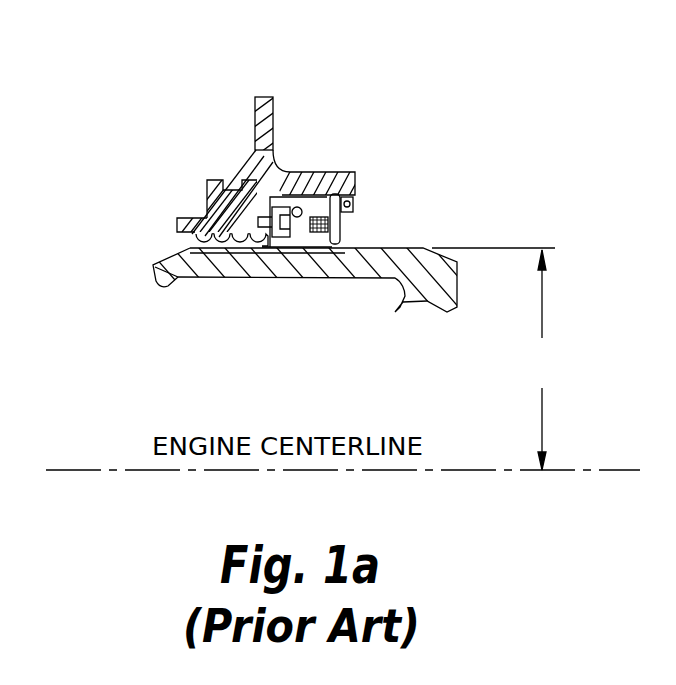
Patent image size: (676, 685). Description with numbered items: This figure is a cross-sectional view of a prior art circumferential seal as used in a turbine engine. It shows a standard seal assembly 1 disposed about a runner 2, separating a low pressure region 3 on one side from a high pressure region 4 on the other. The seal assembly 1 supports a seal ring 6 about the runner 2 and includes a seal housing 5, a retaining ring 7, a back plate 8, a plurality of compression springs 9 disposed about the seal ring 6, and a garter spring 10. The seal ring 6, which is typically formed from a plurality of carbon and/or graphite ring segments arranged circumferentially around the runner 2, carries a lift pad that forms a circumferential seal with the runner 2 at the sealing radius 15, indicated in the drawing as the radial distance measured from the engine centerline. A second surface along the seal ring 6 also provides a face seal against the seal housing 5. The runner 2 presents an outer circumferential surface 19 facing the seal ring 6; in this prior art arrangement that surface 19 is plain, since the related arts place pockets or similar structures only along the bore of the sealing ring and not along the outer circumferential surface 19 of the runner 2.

The seal assembly 1 is at (236, 72).
The runner 2 is at (178, 260).
The low pressure region 3 is at (97, 123).
The high pressure region 4 is at (547, 153).
The seal housing 5 is at (274, 97).
The seal ring 6 is at (303, 240).
The retaining ring 7 is at (358, 205).
The back plate 8 is at (348, 236).
The compression springs 9 is at (316, 200).
The garter spring 10 is at (274, 164).
The sealing radius 15 is at (495, 359).
The outer circumferential surface 19 is at (407, 248).